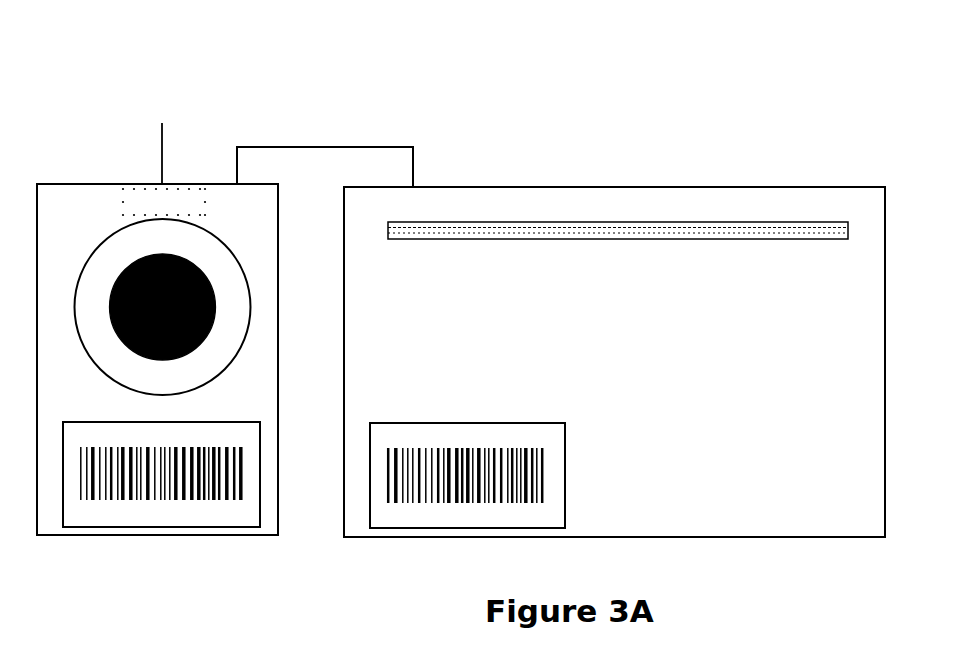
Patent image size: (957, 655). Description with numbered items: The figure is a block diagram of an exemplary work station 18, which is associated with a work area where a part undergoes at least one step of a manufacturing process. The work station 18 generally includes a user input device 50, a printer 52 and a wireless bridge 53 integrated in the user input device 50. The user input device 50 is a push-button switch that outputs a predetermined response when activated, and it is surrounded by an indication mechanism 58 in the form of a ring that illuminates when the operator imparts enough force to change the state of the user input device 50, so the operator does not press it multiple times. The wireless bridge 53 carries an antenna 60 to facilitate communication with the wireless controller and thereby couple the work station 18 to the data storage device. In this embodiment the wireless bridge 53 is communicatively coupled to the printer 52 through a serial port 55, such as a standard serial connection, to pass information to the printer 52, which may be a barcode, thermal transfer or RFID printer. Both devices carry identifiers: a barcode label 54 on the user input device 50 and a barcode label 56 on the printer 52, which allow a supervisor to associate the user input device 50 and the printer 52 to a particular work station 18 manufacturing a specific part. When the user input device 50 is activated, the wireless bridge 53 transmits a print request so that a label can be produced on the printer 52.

The work station 18 is at (681, 64).
The user input device 50 is at (200, 268).
The printer 52 is at (830, 187).
The wireless bridge 53 is at (164, 202).
The barcode label 54 is at (134, 527).
The serial port 55 is at (344, 148).
The barcode label 56 is at (425, 528).
The indication mechanism 58 is at (128, 222).
The antenna 60 is at (164, 143).